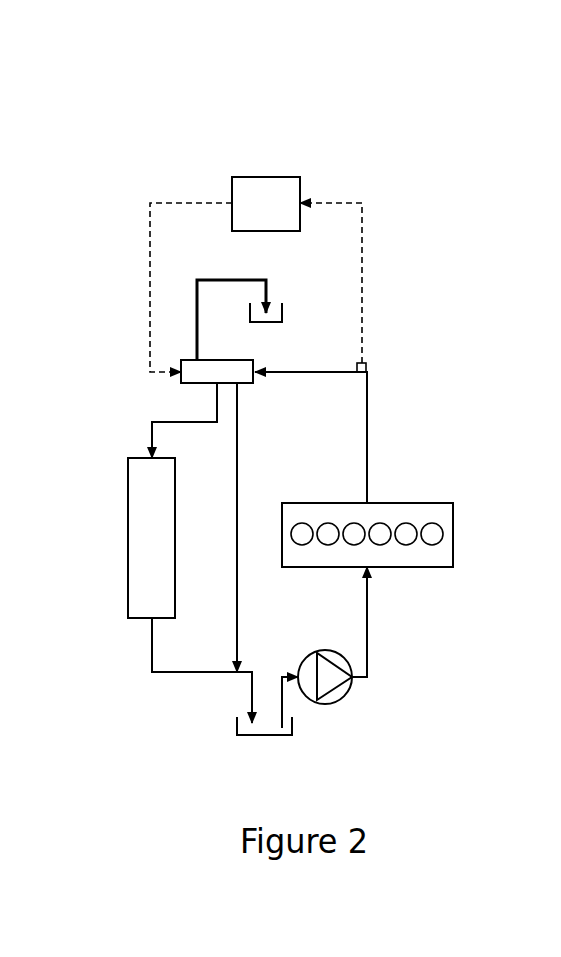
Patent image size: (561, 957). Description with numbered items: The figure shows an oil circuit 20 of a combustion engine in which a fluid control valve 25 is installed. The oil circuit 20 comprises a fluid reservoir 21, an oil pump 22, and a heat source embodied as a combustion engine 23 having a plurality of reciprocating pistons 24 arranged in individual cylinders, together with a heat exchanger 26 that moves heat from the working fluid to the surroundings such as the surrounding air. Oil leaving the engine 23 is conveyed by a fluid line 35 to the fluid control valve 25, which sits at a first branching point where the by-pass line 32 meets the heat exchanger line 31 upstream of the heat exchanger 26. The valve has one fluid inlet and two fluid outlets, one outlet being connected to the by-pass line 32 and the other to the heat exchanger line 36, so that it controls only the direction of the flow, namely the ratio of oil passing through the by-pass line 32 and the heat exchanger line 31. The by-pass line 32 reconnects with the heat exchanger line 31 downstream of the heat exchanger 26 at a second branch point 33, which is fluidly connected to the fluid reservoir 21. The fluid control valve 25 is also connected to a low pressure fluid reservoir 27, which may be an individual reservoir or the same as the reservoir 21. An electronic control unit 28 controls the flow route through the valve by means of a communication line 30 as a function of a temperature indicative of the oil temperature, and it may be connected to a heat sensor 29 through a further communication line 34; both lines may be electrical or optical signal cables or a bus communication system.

The oil circuit 20 is at (402, 158).
The fluid reservoir 21 is at (262, 735).
The oil pump 22 is at (327, 680).
The combustion engine 23 is at (405, 553).
The reciprocating pistons 24 is at (433, 540).
The fluid control valve 25 is at (230, 378).
The heat exchanger 26 is at (151, 538).
The low pressure fluid reservoir 27 is at (273, 303).
The electronic control unit 28 is at (266, 204).
The heat sensor 29 is at (362, 362).
The communication line 30 is at (178, 203).
The heat exchanger line 31 is at (152, 640).
The by-pass line 32 is at (237, 630).
The second branch point 33 is at (237, 680).
The further communication line 34 is at (325, 203).
The fluid line 35 is at (367, 417).
The heat exchanger line 36 is at (175, 420).